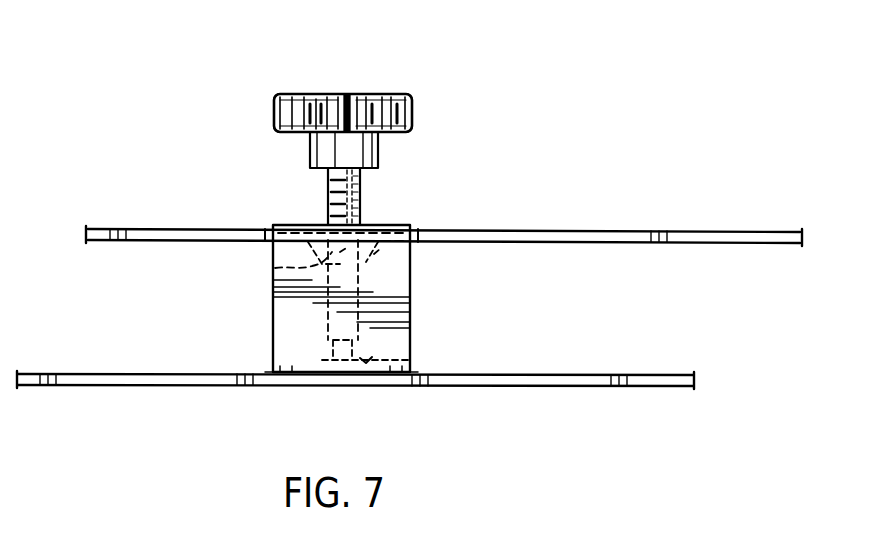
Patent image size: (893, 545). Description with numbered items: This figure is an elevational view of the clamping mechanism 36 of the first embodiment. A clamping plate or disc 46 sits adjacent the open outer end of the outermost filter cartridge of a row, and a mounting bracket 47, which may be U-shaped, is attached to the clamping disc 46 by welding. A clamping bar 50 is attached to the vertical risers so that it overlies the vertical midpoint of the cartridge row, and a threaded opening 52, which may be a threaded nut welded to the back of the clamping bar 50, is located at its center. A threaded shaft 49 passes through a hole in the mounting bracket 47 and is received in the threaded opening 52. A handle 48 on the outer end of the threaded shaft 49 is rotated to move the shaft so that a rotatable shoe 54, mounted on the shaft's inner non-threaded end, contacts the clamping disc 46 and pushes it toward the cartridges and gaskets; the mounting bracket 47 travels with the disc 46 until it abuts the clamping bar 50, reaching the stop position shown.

The clamping mechanism 36 is at (297, 87).
The clamping plate or disc 46 is at (592, 387).
The mounting bracket 47 is at (275, 223).
The handle 48 is at (413, 113).
The threaded shaft 49 is at (361, 191).
The clamping bar 50 is at (666, 233).
The threaded opening 52 is at (275, 268).
The shoe 54 is at (411, 360).